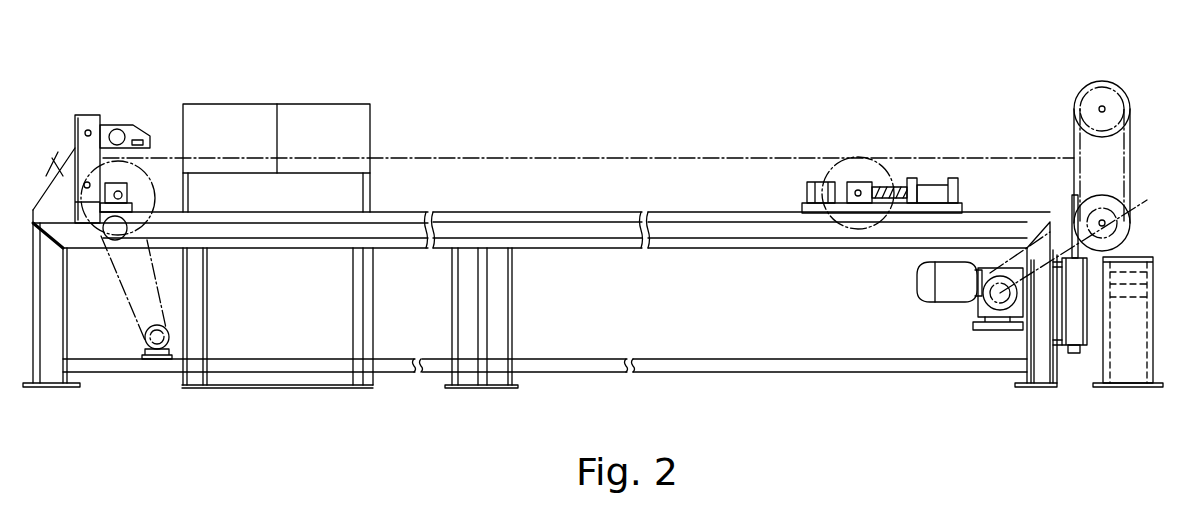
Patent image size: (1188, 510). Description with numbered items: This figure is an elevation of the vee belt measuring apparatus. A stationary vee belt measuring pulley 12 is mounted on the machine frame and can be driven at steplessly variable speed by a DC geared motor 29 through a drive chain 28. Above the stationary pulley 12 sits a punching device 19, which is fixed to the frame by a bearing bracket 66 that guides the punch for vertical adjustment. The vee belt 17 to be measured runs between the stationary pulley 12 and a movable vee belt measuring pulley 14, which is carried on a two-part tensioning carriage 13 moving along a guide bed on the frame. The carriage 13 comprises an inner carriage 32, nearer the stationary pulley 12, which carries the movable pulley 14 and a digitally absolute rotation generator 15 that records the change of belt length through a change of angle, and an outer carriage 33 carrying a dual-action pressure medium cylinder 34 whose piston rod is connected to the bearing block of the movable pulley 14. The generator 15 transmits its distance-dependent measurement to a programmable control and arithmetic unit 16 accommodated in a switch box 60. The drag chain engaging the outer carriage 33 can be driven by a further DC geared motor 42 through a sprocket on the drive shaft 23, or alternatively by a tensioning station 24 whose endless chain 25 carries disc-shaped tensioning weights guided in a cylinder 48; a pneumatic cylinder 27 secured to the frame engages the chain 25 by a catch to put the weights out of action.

The stationary vee belt measuring pulley 12 is at (150, 182).
The tensioning carriage 13 is at (950, 171).
The movable vee belt measuring pulley 14 is at (846, 165).
The digitally absolute rotation generator 15 is at (818, 187).
The control and arithmetic unit 16 is at (303, 115).
The vee belt 17 is at (550, 157).
The punching device 19 is at (116, 117).
The drive shaft 23 is at (1117, 227).
The tensioning station 24 is at (1137, 171).
The endless chain 25 is at (1071, 178).
The pneumatic cylinder 27 is at (1068, 355).
The drive chain 28 is at (133, 308).
The DC geared motor 29 is at (170, 332).
The inner carriage 32 is at (810, 212).
The outer carriage 33 is at (917, 208).
The dual-action pressure medium cylinder 34 is at (927, 188).
The DC geared motor 42 is at (940, 287).
The cylinder 48 is at (1155, 355).
The switch box 60 is at (362, 103).
The bearing bracket 66 is at (53, 170).